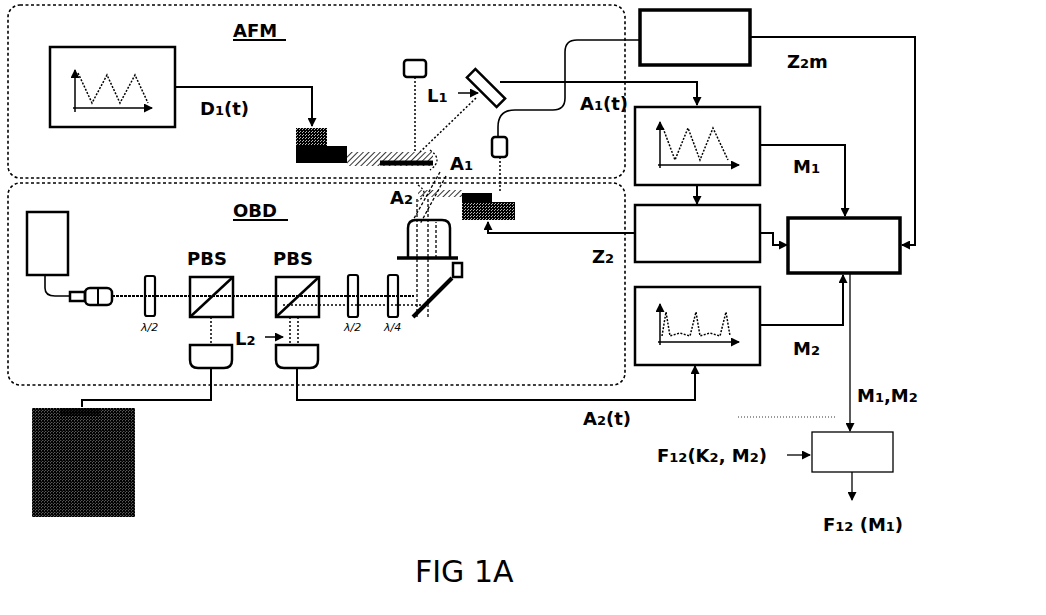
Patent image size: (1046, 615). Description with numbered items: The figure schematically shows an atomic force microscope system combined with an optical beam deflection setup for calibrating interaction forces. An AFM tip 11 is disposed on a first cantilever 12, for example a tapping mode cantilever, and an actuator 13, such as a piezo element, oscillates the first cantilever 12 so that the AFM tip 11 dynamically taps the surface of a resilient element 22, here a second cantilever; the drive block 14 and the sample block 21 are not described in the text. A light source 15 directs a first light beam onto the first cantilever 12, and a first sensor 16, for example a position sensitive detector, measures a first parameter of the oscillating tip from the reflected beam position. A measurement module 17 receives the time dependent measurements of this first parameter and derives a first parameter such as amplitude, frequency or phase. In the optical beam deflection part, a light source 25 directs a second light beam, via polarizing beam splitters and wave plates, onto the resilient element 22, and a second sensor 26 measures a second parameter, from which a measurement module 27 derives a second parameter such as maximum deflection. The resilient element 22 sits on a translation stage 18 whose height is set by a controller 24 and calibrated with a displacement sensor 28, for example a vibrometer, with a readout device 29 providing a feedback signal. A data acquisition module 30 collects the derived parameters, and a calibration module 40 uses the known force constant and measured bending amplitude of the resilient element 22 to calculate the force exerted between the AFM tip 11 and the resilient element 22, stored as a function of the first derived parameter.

The AFM tip 11 is at (419, 178).
The first cantilever 12 is at (385, 150).
The actuator 13 is at (293, 142).
The drive signal generator 14 is at (171, 81).
The light source 15 is at (414, 92).
The first sensor 16 is at (558, 103).
The measurement module 17 is at (755, 136).
The translation stage 18 is at (518, 210).
The sample 21 is at (95, 483).
The resilient element 22 is at (439, 201).
The controller 24 is at (706, 248).
The light source 25 is at (60, 258).
The second sensor 26 is at (325, 363).
The measurement module 27 is at (755, 316).
The displacement sensor 28 is at (511, 150).
The readout device 29 is at (706, 58).
The data acquisition module 30 is at (858, 261).
The calibration module 40 is at (866, 468).